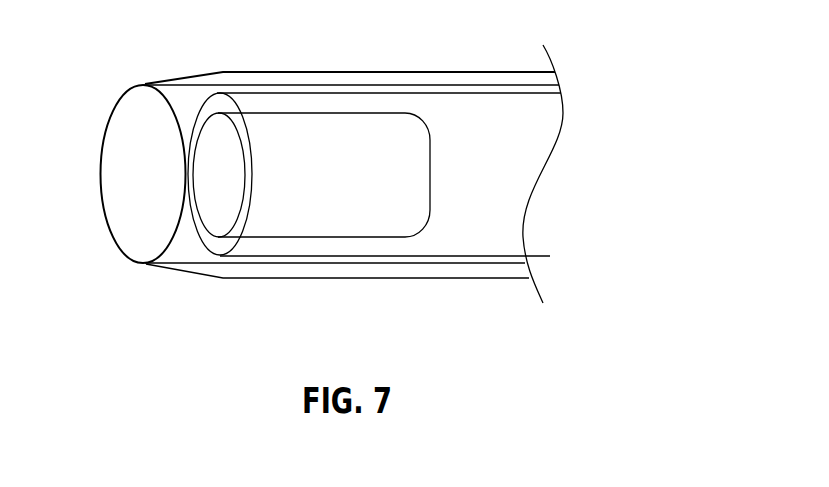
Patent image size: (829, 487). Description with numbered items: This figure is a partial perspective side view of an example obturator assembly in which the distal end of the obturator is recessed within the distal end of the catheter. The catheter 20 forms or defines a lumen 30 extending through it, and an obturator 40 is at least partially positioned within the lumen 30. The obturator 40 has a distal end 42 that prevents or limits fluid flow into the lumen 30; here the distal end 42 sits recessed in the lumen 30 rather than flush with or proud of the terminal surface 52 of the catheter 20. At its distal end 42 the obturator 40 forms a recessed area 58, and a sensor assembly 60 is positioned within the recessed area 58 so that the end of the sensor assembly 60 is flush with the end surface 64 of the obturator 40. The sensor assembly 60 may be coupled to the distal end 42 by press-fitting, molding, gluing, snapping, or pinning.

The catheter 20 is at (353, 72).
The lumen 30 is at (127, 170).
The obturator 40 is at (430, 132).
The distal end 42 is at (322, 264).
The terminal surface 52 is at (148, 263).
The recessed area 58 is at (363, 237).
The sensor assembly 60 is at (297, 128).
The end surface 64 is at (218, 248).